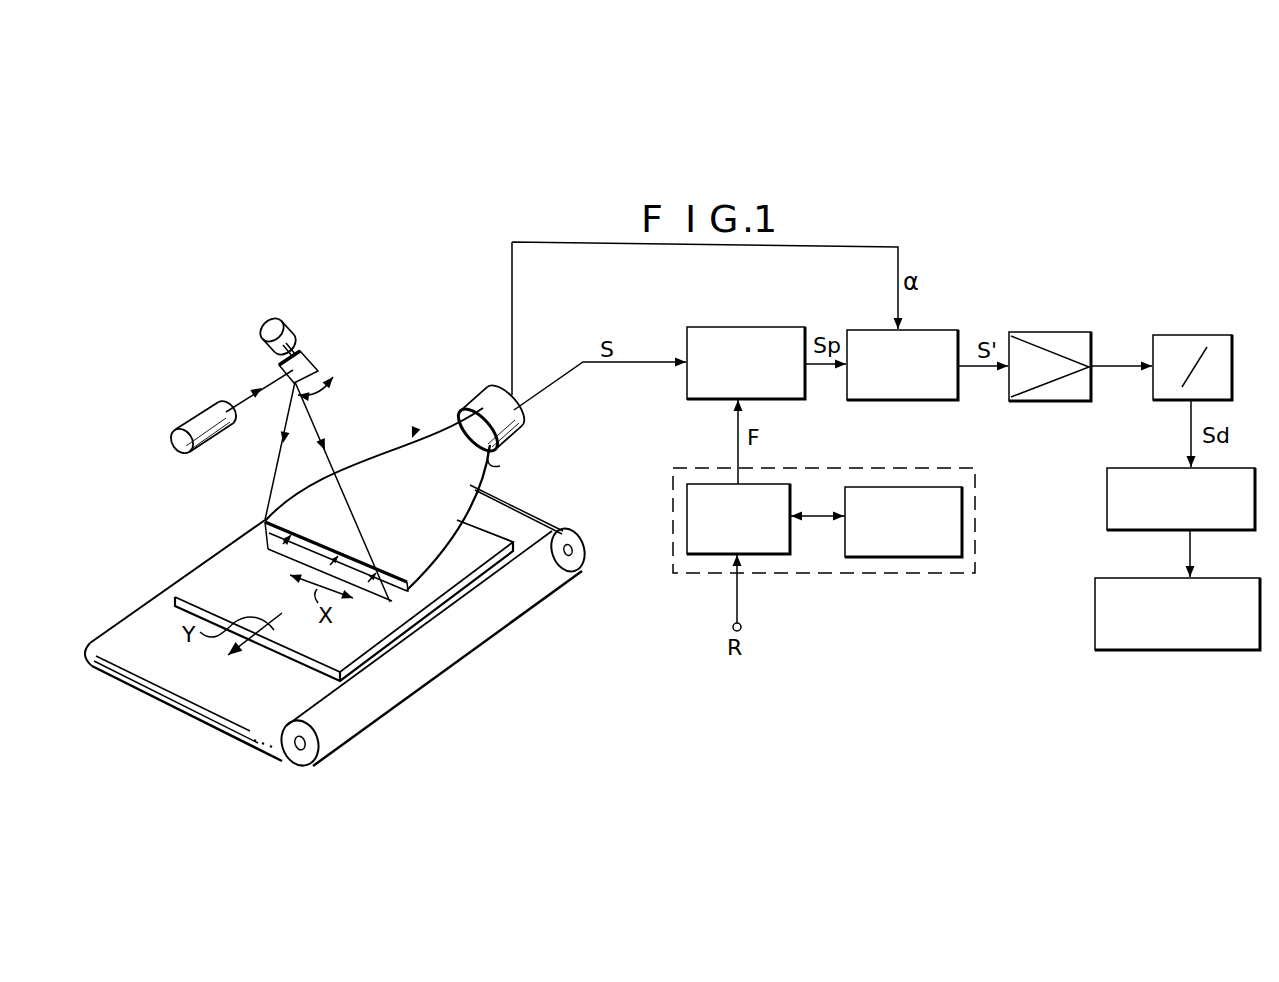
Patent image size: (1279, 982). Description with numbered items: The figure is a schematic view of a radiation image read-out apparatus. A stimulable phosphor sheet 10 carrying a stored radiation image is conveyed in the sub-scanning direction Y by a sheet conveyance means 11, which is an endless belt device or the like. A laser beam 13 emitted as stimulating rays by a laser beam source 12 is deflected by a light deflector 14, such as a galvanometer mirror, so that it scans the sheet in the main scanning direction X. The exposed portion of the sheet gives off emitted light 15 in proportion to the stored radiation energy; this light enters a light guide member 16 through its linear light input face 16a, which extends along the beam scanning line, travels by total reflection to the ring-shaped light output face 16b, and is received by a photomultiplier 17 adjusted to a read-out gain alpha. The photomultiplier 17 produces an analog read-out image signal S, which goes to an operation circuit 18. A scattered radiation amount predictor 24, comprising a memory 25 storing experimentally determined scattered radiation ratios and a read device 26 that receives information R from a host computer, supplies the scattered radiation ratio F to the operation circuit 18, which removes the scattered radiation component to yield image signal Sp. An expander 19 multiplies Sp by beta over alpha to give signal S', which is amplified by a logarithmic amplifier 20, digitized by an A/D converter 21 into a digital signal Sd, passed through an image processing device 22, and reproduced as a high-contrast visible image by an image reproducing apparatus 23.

The stimulable phosphor sheet 10 is at (385, 655).
The sheet conveyance means 11 is at (320, 697).
The laser beam source 12 is at (207, 410).
The laser beam 13 is at (340, 462).
The light deflector 14 is at (318, 360).
The emitted light 15 is at (290, 538).
The light guide member 16 is at (412, 438).
The linear light input face 16a is at (398, 590).
The ring-shaped light output face 16b is at (500, 466).
The photomultiplier 17 is at (490, 397).
The operation circuit 18 is at (752, 327).
The expander 19 is at (860, 330).
The logarithmic amplifier 20 is at (1062, 332).
The A/D converter 21 is at (1198, 335).
The image processing device 22 is at (1148, 468).
The image reproducing apparatus 23 is at (1140, 650).
The scattered radiation amount predictor 24 is at (978, 505).
The memory 25 is at (925, 557).
The read device 26 is at (775, 554).